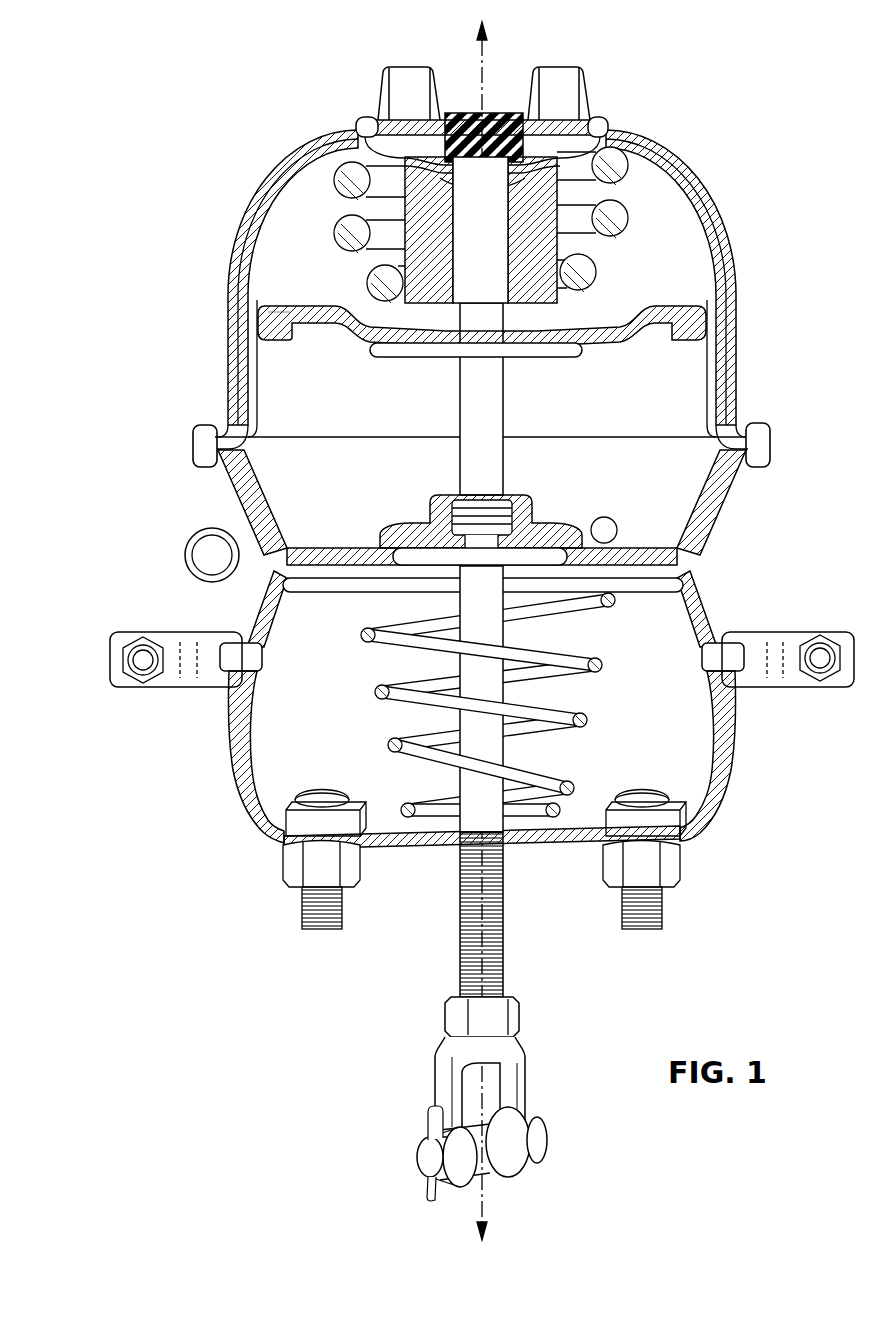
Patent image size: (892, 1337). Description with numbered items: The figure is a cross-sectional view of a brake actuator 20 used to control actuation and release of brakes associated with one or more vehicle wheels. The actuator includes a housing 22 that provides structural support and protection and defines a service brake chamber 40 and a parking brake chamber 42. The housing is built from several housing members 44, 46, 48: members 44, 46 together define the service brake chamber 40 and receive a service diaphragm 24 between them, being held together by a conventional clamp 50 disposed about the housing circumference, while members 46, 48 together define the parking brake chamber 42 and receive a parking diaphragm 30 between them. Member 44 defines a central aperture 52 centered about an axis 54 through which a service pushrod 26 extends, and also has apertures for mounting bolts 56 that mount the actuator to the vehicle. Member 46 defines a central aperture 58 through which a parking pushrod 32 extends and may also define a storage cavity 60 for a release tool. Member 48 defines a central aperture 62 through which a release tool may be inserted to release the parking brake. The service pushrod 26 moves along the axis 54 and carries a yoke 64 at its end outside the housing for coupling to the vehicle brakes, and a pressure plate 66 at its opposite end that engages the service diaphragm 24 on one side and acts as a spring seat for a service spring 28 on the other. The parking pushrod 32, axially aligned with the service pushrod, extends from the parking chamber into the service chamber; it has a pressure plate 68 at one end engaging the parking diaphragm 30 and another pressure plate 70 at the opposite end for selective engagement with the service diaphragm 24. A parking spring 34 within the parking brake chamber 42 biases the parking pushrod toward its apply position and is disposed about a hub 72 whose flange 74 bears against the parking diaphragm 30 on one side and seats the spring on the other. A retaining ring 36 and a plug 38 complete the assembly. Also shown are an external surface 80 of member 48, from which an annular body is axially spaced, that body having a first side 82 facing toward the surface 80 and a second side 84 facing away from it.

The brake actuator 20 is at (172, 150).
The housing 22 is at (205, 415).
The service diaphragm 24 is at (272, 640).
The service pushrod 26 is at (507, 933).
The service spring 28 is at (568, 718).
The parking diaphragm 30 is at (273, 320).
The parking pushrod 32 is at (494, 410).
The parking spring 34 is at (612, 222).
The retaining ring 36 is at (607, 122).
The plug 38 is at (610, 90).
The service brake chamber 40 is at (680, 760).
The parking brake chamber 42 is at (672, 490).
The housing member 44 is at (247, 783).
The housing member 46 is at (241, 487).
The housing member 48 is at (233, 289).
The clamp 50 is at (773, 673).
The central aperture 52 is at (468, 848).
The axis 54 is at (483, 1195).
The mounting bolts 56 is at (660, 905).
The central aperture 58 is at (494, 485).
The storage cavity 60 is at (207, 556).
The central aperture 62 is at (515, 192).
The yoke 64 is at (523, 1087).
The pressure plate 66 is at (357, 587).
The pressure plate 68 is at (578, 350).
The pressure plate 70 is at (550, 562).
The hub 72 is at (413, 240).
The flange 74 is at (328, 303).
The external surface 80 is at (310, 143).
The first side 82 is at (360, 128).
The second side 84 is at (370, 120).